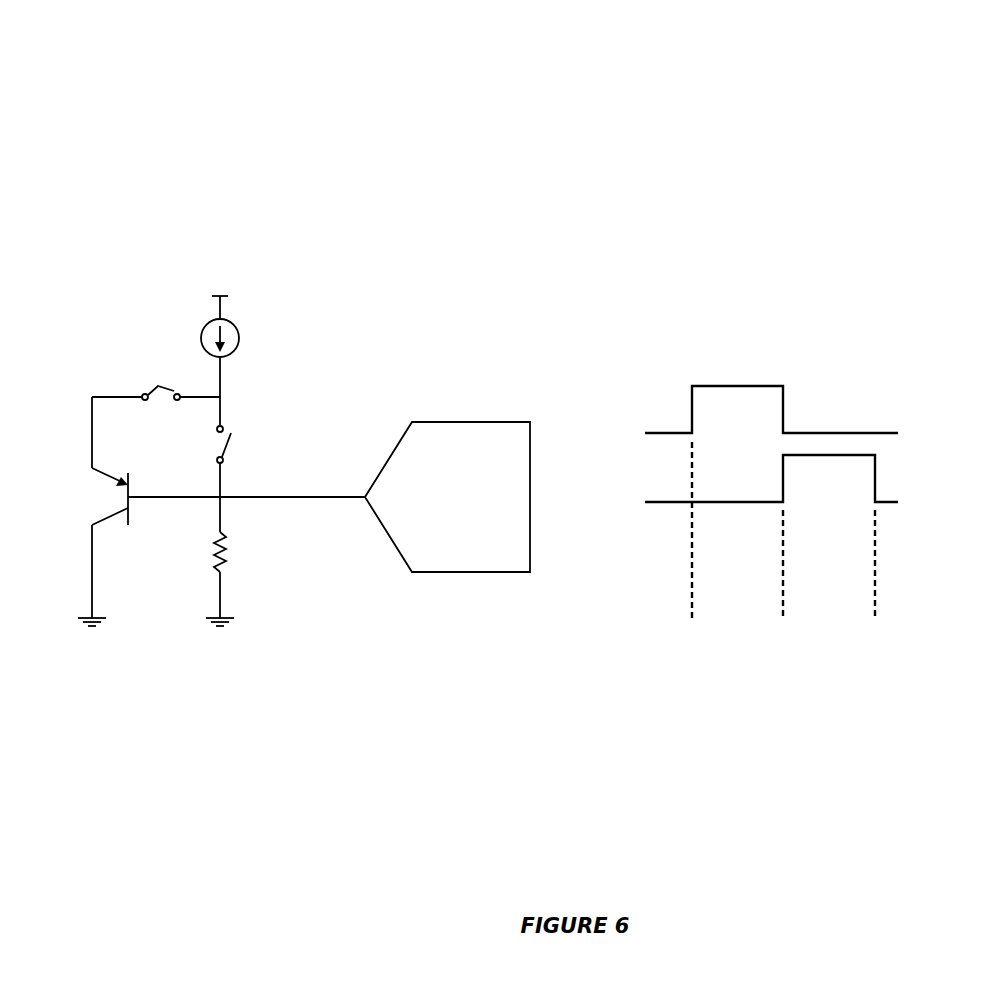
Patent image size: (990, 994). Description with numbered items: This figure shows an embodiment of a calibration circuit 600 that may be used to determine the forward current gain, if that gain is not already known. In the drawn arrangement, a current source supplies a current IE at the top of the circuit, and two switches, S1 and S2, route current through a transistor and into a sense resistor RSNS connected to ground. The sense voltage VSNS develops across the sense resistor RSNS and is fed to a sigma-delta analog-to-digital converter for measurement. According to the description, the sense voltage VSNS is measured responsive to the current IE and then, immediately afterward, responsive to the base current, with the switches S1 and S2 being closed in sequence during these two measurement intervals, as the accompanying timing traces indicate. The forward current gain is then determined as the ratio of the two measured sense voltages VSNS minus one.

The calibration circuit 600 is at (782, 48).
The switch S1 is at (237, 444).
The switch S2 is at (161, 381).
The current IE is at (231, 326).
The sense resistor RSNS is at (197, 552).
The sense voltage VSNS is at (252, 557).